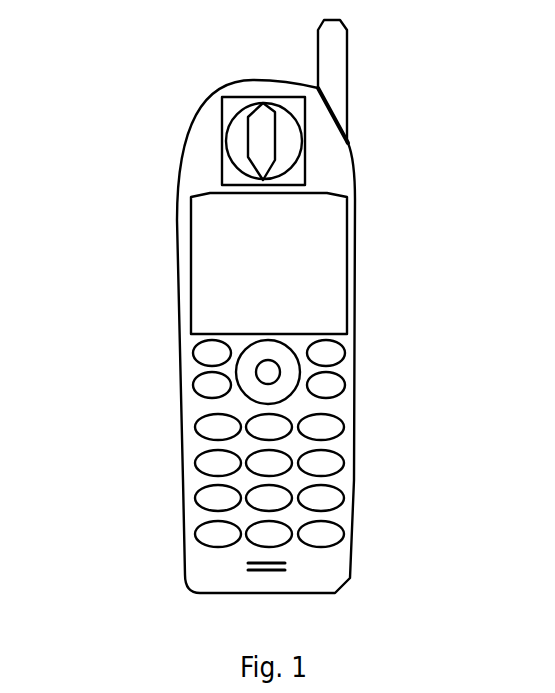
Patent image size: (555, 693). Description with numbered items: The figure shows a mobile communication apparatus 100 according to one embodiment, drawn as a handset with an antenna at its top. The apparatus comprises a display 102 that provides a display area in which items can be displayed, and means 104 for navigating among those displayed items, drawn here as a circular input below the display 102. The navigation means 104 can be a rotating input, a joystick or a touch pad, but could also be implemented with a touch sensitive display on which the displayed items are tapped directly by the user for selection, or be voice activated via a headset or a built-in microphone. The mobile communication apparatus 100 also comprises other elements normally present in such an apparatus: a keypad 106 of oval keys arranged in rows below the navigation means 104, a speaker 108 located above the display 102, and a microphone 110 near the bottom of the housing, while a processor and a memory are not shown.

The mobile communication apparatus 100 is at (193, 404).
The display 102 is at (326, 265).
The means for navigating 104 is at (270, 377).
The keypad 106 is at (240, 462).
The speaker 108 is at (262, 145).
The microphone 110 is at (250, 572).